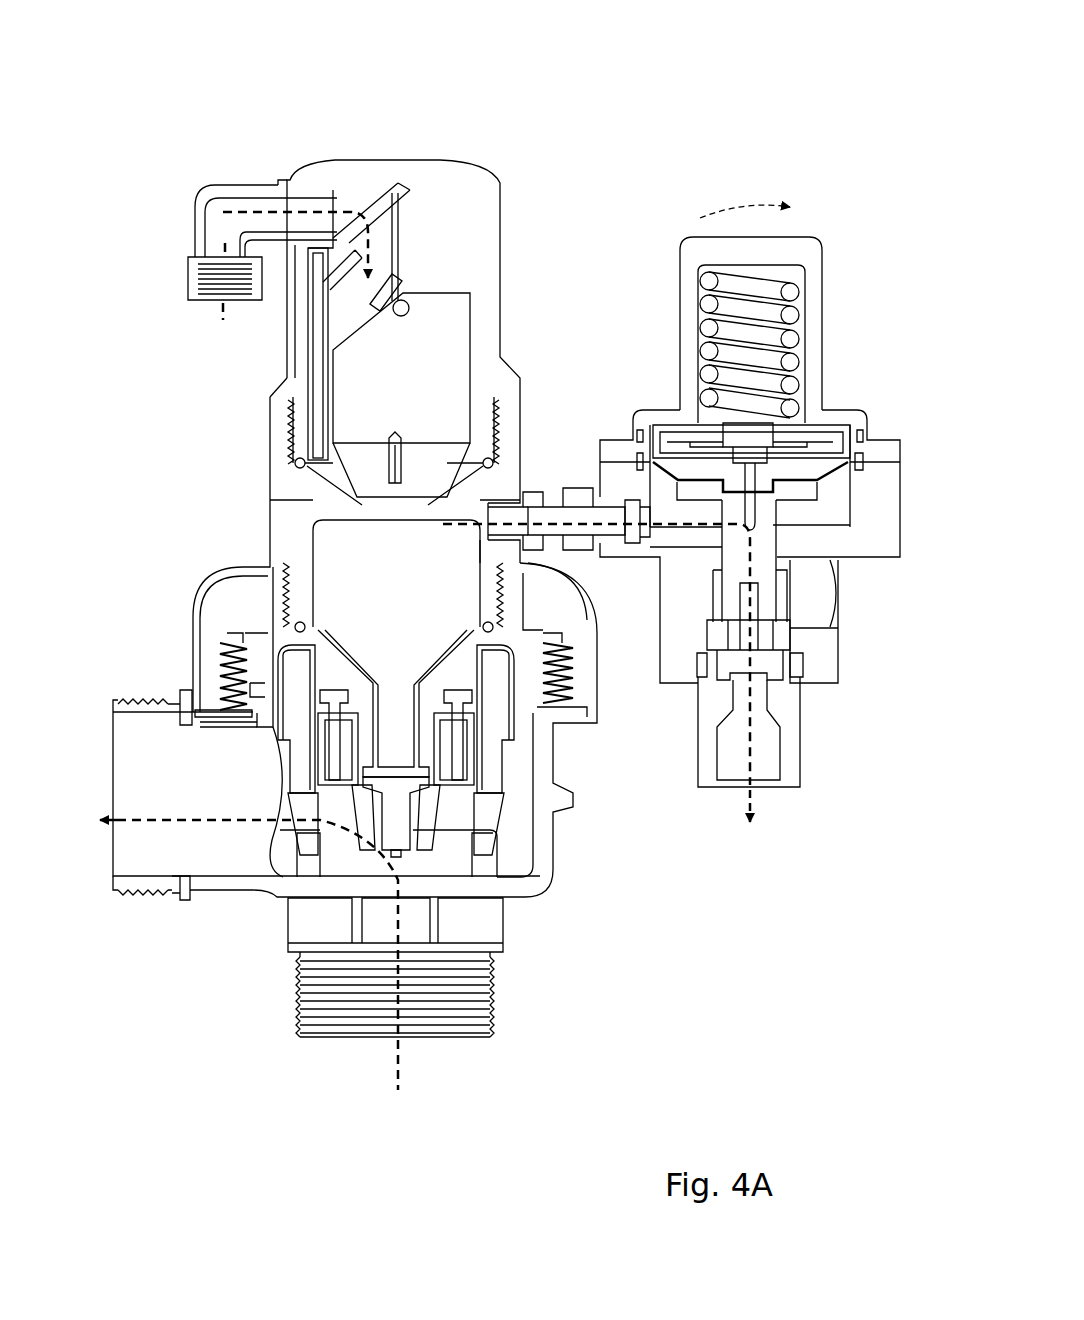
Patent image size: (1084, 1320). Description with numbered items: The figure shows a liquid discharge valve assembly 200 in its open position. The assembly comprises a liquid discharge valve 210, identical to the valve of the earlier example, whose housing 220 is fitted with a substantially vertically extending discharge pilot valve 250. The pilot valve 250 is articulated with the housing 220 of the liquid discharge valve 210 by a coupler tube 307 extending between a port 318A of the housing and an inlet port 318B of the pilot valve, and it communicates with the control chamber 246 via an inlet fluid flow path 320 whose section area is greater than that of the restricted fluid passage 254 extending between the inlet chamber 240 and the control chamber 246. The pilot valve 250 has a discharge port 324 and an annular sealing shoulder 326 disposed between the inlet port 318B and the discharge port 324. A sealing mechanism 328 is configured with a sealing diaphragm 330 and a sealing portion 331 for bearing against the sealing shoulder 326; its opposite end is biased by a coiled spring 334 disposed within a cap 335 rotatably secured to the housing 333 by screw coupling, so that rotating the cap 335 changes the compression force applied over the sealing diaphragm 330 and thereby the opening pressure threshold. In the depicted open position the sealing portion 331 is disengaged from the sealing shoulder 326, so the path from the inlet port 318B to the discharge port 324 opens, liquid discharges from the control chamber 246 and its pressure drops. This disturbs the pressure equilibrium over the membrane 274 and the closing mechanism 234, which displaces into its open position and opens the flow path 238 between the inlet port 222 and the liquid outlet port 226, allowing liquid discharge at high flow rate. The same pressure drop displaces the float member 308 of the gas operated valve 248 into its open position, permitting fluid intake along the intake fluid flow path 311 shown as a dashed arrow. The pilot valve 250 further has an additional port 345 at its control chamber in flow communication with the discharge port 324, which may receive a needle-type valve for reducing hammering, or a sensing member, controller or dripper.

The liquid discharge valve assembly 200 is at (650, 108).
The liquid discharge valve 210 is at (197, 497).
The valve body 220 is at (272, 490).
The inlet port 222 is at (330, 1040).
The liquid outlet port 226 is at (165, 748).
The closing mechanism 234 is at (520, 733).
The flow path 238 is at (158, 825).
The inlet chamber 240 is at (480, 815).
The control chamber 246 is at (355, 553).
The gas operated valve 248 is at (258, 364).
The discharge pilot valve 250 is at (836, 730).
The restricted fluid passage 254 is at (395, 810).
The membrane 274 is at (270, 727).
The coupler tube 307 is at (573, 555).
The float member 308 is at (455, 340).
The intake fluid flow path 311 is at (278, 212).
The port 318A is at (432, 505).
The inlet port 318B is at (603, 540).
The inlet fluid flow path 320 is at (567, 515).
The discharge port 324 is at (767, 782).
The sealing shoulder 326 is at (775, 520).
The sealing mechanism 328 is at (850, 525).
The sealing diaphragm 330 is at (797, 455).
The sealing portion 331 is at (790, 470).
The housing 333 is at (845, 515).
The coiled spring 334 is at (712, 300).
The cap 335 is at (812, 270).
The additional port 345 is at (817, 610).